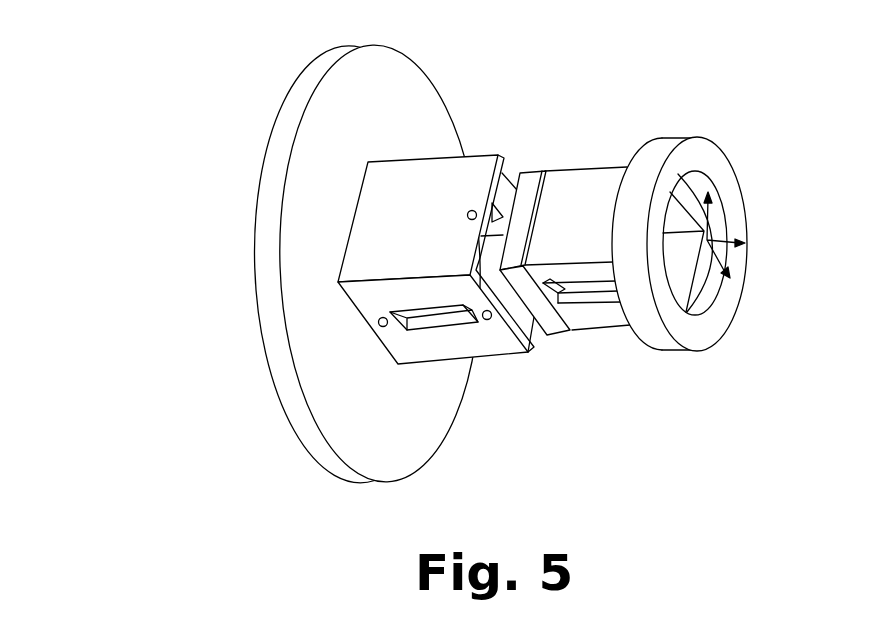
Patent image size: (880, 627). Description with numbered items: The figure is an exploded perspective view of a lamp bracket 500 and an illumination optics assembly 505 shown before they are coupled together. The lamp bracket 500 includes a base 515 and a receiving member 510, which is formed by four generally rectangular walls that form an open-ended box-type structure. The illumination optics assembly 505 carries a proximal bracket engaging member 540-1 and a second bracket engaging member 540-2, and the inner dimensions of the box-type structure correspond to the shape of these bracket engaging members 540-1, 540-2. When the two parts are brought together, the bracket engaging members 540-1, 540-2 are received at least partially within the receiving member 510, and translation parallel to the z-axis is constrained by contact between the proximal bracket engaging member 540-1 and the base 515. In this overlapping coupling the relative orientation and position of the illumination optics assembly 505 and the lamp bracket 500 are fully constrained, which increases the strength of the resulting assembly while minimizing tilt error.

The lamp bracket 500 is at (421, 255).
The illumination optics assembly 505 is at (630, 106).
The receiving member 510 is at (491, 360).
The base 515 is at (337, 463).
The proximal bracket engaging member 540-1 is at (534, 173).
The bracket engaging member 540-2 is at (590, 170).